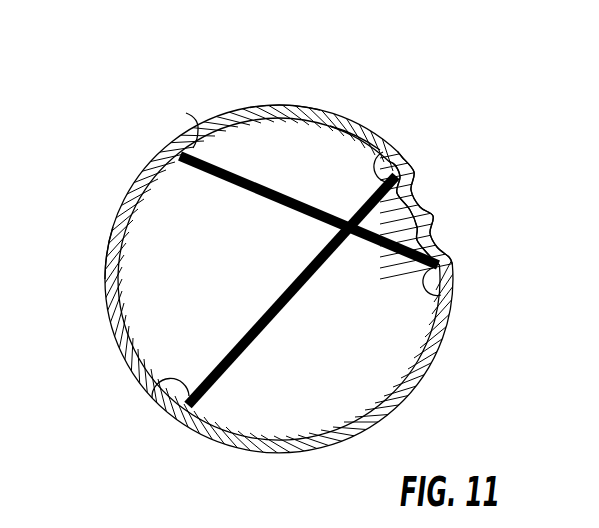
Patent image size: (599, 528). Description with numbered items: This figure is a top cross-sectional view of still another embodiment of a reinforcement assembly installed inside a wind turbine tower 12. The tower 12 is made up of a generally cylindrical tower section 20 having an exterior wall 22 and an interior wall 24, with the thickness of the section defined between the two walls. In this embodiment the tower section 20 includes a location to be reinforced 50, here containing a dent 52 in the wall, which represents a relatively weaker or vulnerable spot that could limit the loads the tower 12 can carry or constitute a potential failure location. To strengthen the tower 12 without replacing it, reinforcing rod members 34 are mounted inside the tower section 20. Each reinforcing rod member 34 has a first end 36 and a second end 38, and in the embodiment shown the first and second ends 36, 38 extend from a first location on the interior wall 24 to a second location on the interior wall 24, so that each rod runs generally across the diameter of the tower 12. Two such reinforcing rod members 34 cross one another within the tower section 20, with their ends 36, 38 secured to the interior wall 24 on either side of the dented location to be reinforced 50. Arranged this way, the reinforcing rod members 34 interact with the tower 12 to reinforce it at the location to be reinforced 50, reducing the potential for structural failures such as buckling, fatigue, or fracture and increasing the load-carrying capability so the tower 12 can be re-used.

The wind turbine tower 12 is at (464, 357).
The tower section 20 is at (98, 221).
The exterior wall 22 is at (300, 106).
The interior wall 24 is at (360, 140).
The reinforcing rod members 34 is at (253, 208).
The first end 36 is at (195, 112).
The second end 38 is at (384, 151).
The location to be reinforced 50 is at (474, 178).
The dent 52 is at (434, 238).